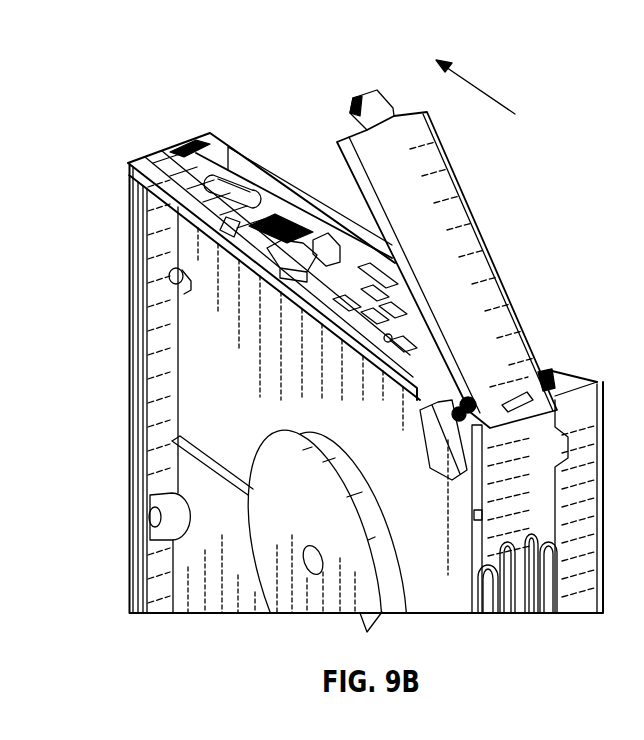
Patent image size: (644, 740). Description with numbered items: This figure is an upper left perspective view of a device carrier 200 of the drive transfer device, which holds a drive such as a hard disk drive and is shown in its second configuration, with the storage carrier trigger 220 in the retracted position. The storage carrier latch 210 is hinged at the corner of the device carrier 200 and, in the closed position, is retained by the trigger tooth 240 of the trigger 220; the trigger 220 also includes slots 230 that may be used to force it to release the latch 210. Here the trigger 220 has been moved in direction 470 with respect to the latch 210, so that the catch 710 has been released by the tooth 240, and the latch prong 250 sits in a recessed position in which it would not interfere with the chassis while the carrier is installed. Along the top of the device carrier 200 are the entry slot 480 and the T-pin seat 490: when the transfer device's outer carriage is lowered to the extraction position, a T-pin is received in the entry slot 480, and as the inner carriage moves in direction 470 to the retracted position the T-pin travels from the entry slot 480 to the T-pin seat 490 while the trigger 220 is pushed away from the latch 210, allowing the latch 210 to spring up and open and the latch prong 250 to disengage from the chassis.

The device carrier 200 is at (217, 441).
The storage carrier latch 210 is at (460, 281).
The storage carrier trigger 220 is at (253, 208).
The slots 230 is at (327, 246).
The trigger tooth 240 is at (305, 250).
The latch prong 250 is at (452, 470).
The direction 470 is at (479, 88).
The entry slot 480 is at (266, 188).
The T-pin seat 490 is at (213, 177).
The catch 710 is at (378, 92).